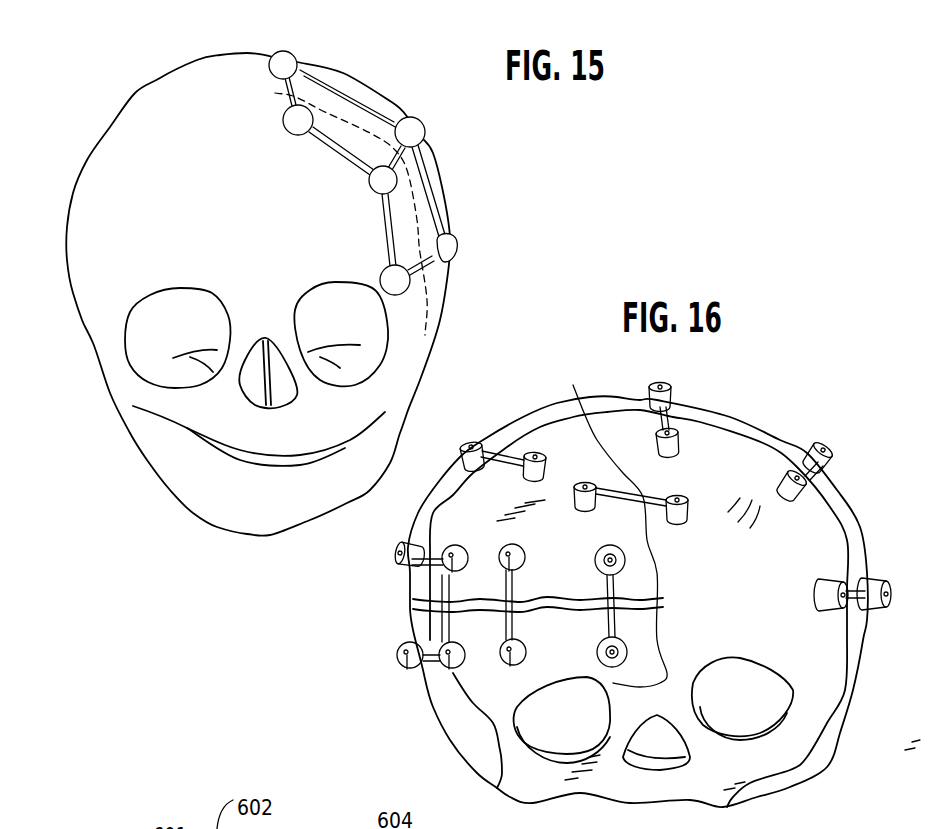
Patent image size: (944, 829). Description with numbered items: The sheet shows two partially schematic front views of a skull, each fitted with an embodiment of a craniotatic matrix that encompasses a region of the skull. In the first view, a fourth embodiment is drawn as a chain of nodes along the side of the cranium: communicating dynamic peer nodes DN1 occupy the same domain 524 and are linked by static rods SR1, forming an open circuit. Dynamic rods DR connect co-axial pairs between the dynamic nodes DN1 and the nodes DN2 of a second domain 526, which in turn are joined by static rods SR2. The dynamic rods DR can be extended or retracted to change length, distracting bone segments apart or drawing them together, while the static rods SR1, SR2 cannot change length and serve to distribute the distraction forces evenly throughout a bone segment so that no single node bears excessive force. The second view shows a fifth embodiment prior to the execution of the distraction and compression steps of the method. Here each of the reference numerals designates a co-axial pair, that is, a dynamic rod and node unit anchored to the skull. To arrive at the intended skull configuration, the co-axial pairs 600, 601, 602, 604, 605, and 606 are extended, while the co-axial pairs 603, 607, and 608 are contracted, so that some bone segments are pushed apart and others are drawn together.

In FIG. 15, the dynamic rod mechanism DR is at (275, 92).
In FIG. 15, the dynamic peer node DN1 is at (296, 121).
In FIG. 15, the node of second domain DN2 is at (285, 60).
In FIG. 15, the static rod SR1 is at (320, 148).
In FIG. 15, the static rod SR2 is at (373, 103).
In FIG. 15, the domain 524 is at (351, 192).
In FIG. 15, the second domain 526 is at (357, 83).
In FIG. 16, the co-axial pair 600 is at (440, 566).
In FIG. 16, the co-axial pair 601 is at (503, 450).
In FIG. 16, the co-axial pair 602 is at (573, 385).
In FIG. 16, the co-axial pair 603 is at (625, 578).
In FIG. 16, the co-axial pair 604 is at (688, 410).
In FIG. 16, the co-axial pair 605 is at (797, 463).
In FIG. 16, the co-axial pair 606 is at (847, 697).
In FIG. 16, the co-axial pair 607 is at (485, 640).
In FIG. 16, the co-axial pair 608 is at (445, 625).